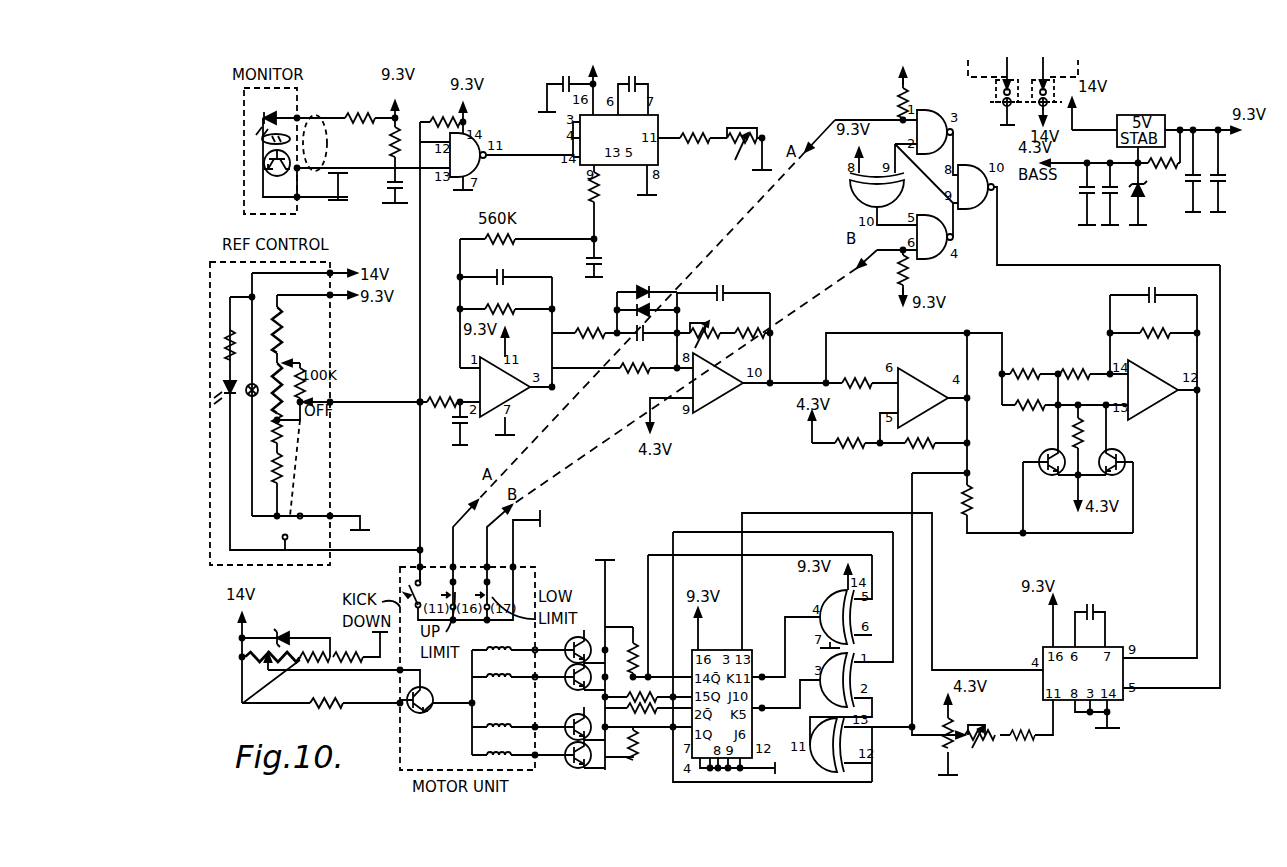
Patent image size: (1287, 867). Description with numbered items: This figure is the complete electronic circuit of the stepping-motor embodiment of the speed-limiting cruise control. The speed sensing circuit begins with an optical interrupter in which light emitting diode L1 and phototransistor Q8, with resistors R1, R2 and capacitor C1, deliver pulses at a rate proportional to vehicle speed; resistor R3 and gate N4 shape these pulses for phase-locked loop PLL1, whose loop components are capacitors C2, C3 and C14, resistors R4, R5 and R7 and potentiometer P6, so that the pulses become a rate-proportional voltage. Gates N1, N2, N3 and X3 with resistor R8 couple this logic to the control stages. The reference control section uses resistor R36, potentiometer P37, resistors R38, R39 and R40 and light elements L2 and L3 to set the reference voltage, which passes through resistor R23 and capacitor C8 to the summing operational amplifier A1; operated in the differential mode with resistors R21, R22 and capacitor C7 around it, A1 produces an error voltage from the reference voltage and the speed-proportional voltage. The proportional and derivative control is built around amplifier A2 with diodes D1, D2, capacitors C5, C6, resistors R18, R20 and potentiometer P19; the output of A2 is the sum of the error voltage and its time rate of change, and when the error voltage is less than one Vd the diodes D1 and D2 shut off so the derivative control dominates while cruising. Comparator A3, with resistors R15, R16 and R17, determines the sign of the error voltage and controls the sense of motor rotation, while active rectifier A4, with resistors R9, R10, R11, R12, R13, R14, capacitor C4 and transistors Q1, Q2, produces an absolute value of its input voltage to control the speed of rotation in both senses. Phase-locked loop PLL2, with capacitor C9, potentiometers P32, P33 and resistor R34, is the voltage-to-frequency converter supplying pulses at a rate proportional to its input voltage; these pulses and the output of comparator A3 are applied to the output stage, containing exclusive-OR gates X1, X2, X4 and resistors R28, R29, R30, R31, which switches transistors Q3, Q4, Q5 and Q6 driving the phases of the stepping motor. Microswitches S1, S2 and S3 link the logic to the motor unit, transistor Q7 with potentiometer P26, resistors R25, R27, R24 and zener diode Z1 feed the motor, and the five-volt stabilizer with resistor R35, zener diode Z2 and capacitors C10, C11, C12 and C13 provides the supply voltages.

The light emitting diode L1 is at (269, 113).
The phototransistor Q8 is at (273, 172).
The resistor R1 is at (360, 114).
The resistor R2 is at (381, 144).
The capacitor C1 is at (376, 189).
The resistor R3 is at (443, 117).
The NAND gate N4 is at (482, 145).
The phase locked loop PLL1 is at (619, 140).
The capacitor C2 is at (565, 81).
The capacitor C3 is at (633, 81).
The resistor R4 is at (591, 187).
The resistor R5 is at (693, 134).
The potentiometer P6 is at (762, 136).
The resistor R7 is at (887, 94).
The NAND gate N1 is at (935, 121).
The NAND gate N2 is at (935, 245).
The NAND gate N3 is at (976, 173).
The exclusive OR gate X3 is at (868, 190).
The resistor R8 is at (889, 274).
The zener diode Z2 is at (1143, 205).
The resistor R35 is at (1164, 180).
The capacitor C10 is at (1222, 186).
The capacitor C11 is at (1200, 170).
The capacitor C12 is at (1104, 197).
The capacitor C13 is at (1065, 192).
The capacitor C14 is at (606, 258).
The capacitor C7 is at (505, 267).
The resistor R22 is at (514, 308).
The resistor R23 is at (444, 384).
The capacitor C8 is at (445, 428).
The operational amplifier A1 is at (505, 387).
The resistor R21 is at (590, 330).
The diode D1 is at (640, 279).
The diode D2 is at (659, 288).
The capacitor C6 is at (649, 335).
The capacitor C5 is at (727, 284).
The potentiometer P19 is at (712, 318).
The resistor R18 is at (750, 320).
The resistor R20 is at (625, 387).
The amplifier A2 is at (718, 383).
The resistor R16 is at (860, 376).
The comparator A3 is at (923, 398).
The resistor R17 is at (849, 442).
The resistor R15 is at (923, 442).
The resistor R14 is at (983, 496).
The resistor R11 is at (1032, 355).
The resistor R10 is at (1078, 355).
The resistor R12 is at (1035, 402).
The resistor R13 is at (1082, 432).
The resistor R9 is at (1156, 331).
The capacitor C4 is at (1159, 286).
The active rectifier A4 is at (1153, 390).
The phototransistor Q1 is at (1119, 454).
The transistor Q2 is at (1043, 455).
The resistor R36 is at (292, 325).
The potentiometer P37 is at (290, 358).
The resistor R38 is at (283, 425).
The resistor R39 is at (283, 468).
The resistor R40 is at (229, 334).
The light emitting diode L2 is at (217, 386).
The photo sensor L3 is at (247, 394).
The zener diode Z1 is at (295, 616).
The potentiometer P26 is at (258, 660).
The resistor R25 is at (300, 662).
The resistor R27 is at (330, 704).
The resistor R24 is at (352, 663).
The transistor Q7 is at (426, 707).
The transistor Q3 is at (578, 664).
The transistor Q4 is at (578, 691).
The transistor Q5 is at (578, 741).
The transistor Q6 is at (578, 769).
The resistor R28 is at (637, 647).
The resistor R29 is at (641, 704).
The resistor R30 is at (655, 714).
The resistor R31 is at (630, 750).
The exclusive OR gate X1 is at (832, 675).
The exclusive OR gate X2 is at (830, 612).
The exclusive OR gate X4 is at (825, 748).
The voltage to frequency converter PLL2 is at (1083, 673).
The capacitor C9 is at (1096, 600).
The potentiometer P32 is at (934, 735).
The potentiometer P33 is at (981, 735).
The resistor R34 is at (1028, 733).
The microswitch kick down S1 is at (416, 582).
The microswitch up limit S2 is at (460, 595).
The microswitch low limit S3 is at (492, 597).